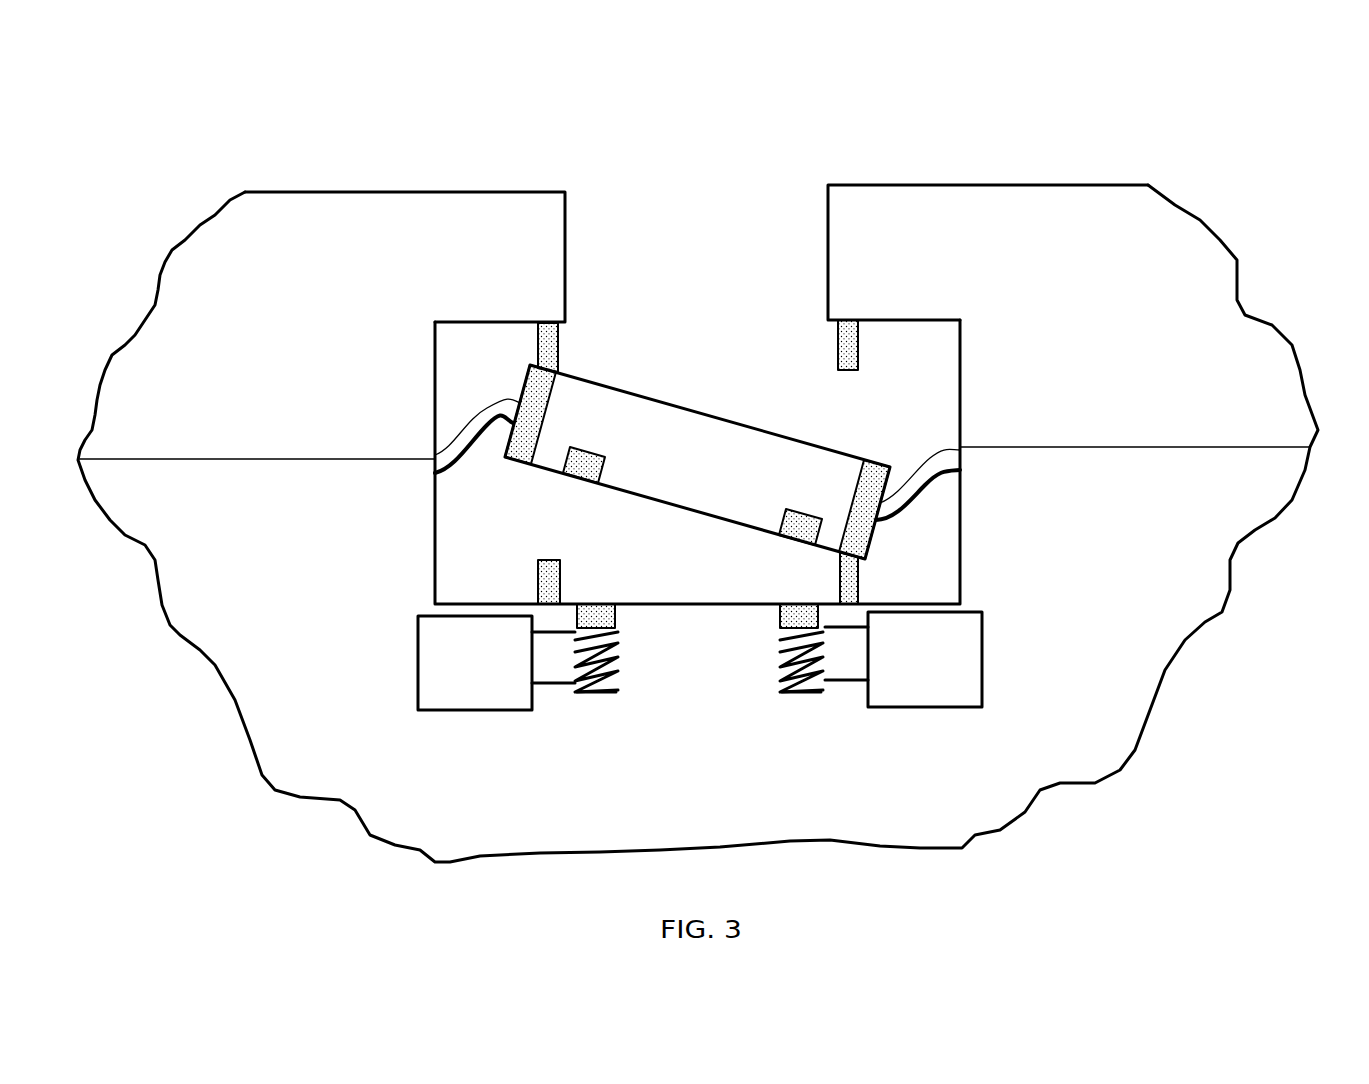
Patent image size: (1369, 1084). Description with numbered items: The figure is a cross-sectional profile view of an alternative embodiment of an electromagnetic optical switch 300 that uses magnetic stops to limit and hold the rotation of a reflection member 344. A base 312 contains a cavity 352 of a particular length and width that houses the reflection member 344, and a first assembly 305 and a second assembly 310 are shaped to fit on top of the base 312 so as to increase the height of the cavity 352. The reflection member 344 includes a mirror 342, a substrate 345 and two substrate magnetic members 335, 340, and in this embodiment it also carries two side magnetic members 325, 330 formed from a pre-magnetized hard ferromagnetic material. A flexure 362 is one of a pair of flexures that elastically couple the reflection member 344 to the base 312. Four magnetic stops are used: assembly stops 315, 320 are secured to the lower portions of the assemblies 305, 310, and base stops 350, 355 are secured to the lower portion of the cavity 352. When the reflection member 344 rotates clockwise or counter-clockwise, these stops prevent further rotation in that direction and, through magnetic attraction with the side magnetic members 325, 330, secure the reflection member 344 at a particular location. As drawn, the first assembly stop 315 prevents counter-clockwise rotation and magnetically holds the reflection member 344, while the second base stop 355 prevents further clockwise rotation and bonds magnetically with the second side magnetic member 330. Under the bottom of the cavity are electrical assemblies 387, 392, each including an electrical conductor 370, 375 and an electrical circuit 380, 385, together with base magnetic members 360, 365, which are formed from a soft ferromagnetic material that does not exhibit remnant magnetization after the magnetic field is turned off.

The electromagnetic optical switch 300 is at (478, 128).
The first assembly 305 is at (355, 222).
The second assembly 310 is at (983, 212).
The base 312 is at (343, 537).
The first assembly stop 315 is at (559, 344).
The second assembly stop 320 is at (838, 342).
The first side magnetic member 325 is at (510, 472).
The second side magnetic member 330 is at (874, 480).
The first substrate magnetic member 335 is at (585, 470).
The second substrate magnetic member 340 is at (795, 525).
The mirror 342 is at (648, 455).
The reflection member 344 is at (728, 328).
The substrate 345 is at (683, 450).
The first base stop 350 is at (556, 596).
The cavity 352 is at (673, 562).
The second base stop 355 is at (846, 591).
The first base magnetic member 360 is at (510, 399).
The flexure 362 is at (882, 524).
The second base magnetic member 365 is at (792, 614).
The first electrical conductor 370 is at (600, 693).
The second electrical conductor 375 is at (798, 693).
The first electrical circuit 380 is at (465, 683).
The second electrical circuit 385 is at (925, 655).
The first electrical assembly 387 is at (553, 706).
The second electrical assembly 392 is at (850, 712).